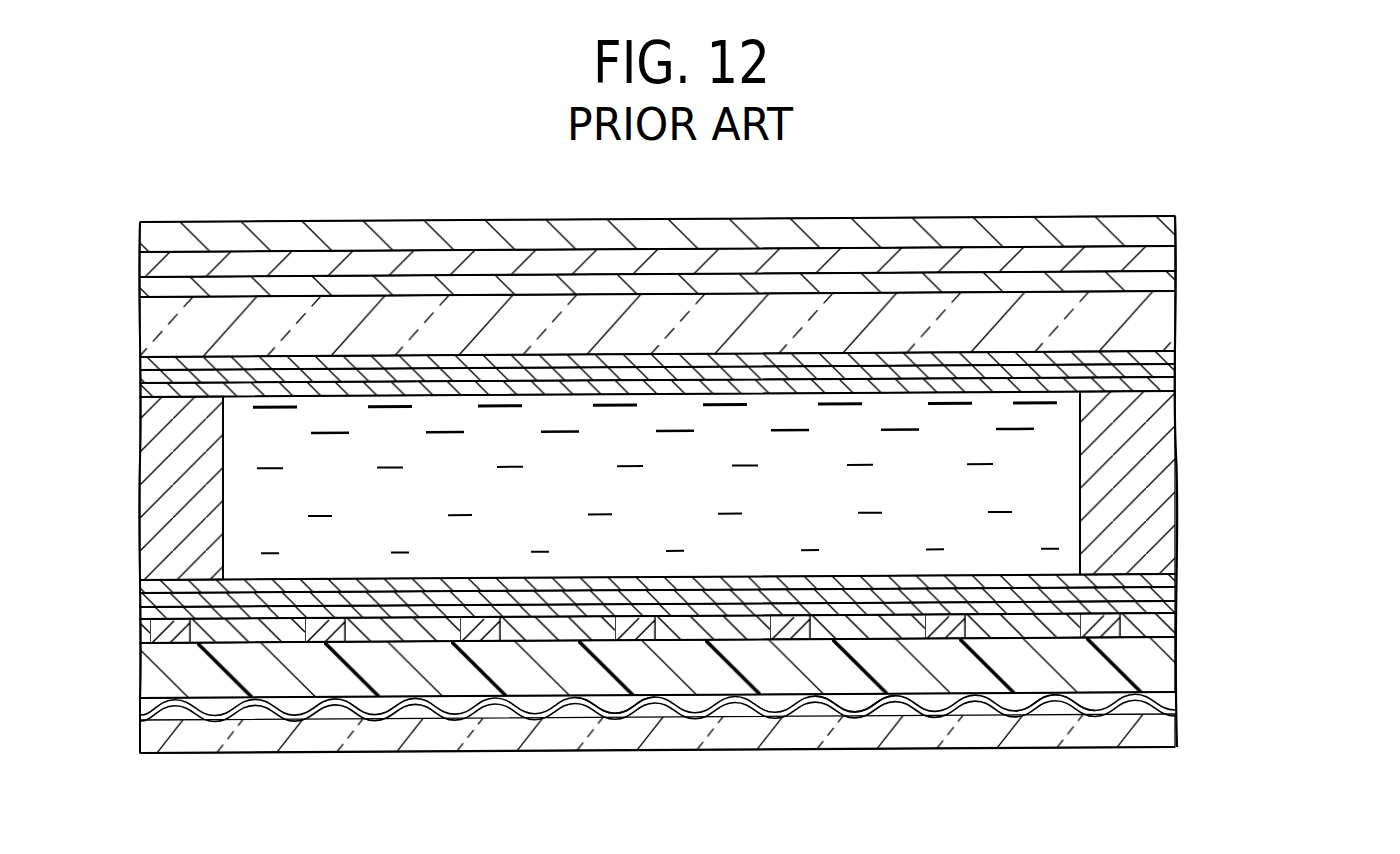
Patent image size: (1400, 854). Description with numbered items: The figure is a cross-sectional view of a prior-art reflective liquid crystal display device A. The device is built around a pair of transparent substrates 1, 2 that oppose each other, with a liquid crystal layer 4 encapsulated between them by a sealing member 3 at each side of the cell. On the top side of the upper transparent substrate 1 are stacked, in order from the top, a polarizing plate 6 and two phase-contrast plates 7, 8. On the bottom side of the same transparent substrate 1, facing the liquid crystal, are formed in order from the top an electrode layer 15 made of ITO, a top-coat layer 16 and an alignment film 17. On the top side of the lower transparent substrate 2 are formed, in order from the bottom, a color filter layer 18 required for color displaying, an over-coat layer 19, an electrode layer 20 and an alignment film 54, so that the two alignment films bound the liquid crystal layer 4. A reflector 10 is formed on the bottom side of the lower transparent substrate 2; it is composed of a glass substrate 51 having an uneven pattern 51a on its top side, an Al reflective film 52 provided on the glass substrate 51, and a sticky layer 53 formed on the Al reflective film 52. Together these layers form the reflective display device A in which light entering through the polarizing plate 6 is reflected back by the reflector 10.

The transparent substrate 1 is at (1158, 311).
The transparent substrate 2 is at (1153, 665).
The sealing member 3 is at (165, 478).
The liquid crystal layer 4 is at (1023, 495).
The polarizing plate 6 is at (1158, 232).
The phase-contrast plate 7 is at (1163, 262).
The phase-contrast plate 8 is at (1163, 283).
The reflector 10 is at (743, 729).
The electrode layer 15 is at (1173, 354).
The top-coat layer 16 is at (1178, 370).
The alignment film 17 is at (1177, 390).
The color filter layer 18 is at (1178, 624).
The over-coat layer 19 is at (1177, 591).
The electrode layer 20 is at (725, 575).
The glass substrate 51 is at (1157, 723).
The uneven pattern 51a is at (1053, 708).
The Al reflective film 52 is at (617, 717).
The sticky layer 53 is at (856, 708).
The alignment film 54 is at (1177, 577).
The reflective liquid crystal display device A is at (737, 513).